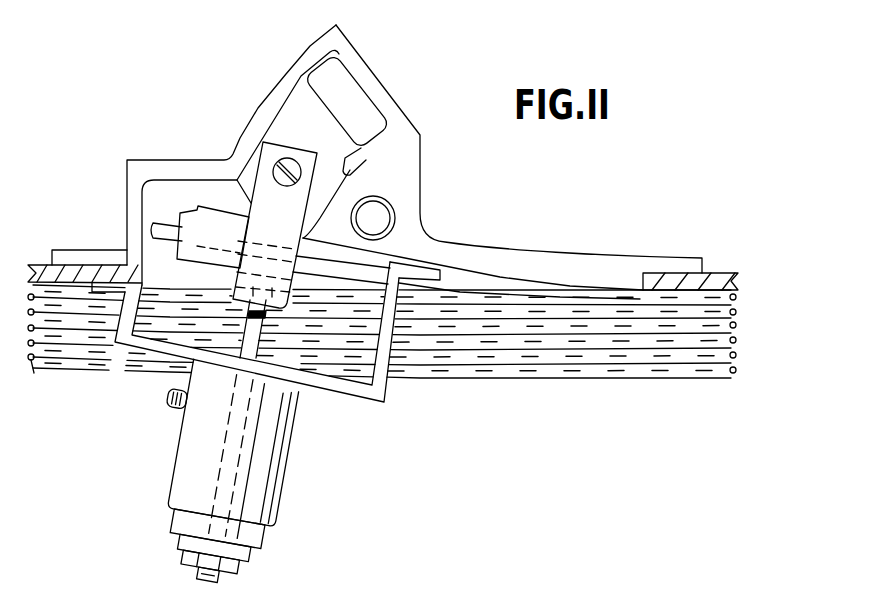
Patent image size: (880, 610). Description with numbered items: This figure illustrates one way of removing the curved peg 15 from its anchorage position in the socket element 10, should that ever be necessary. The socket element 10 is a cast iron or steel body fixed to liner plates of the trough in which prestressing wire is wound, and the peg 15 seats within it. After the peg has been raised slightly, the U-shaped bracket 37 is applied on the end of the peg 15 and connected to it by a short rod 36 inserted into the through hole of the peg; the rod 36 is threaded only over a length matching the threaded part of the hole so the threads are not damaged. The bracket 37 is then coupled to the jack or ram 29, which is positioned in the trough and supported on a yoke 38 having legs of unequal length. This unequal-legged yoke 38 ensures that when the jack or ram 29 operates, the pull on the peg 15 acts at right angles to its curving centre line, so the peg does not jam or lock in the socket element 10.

The socket element 10 is at (265, 79).
The peg 15 is at (338, 112).
The jack or ram 29 is at (270, 475).
The short rod 36 is at (287, 156).
The U-shaped bracket 37 is at (290, 219).
The yoke 38 is at (383, 354).